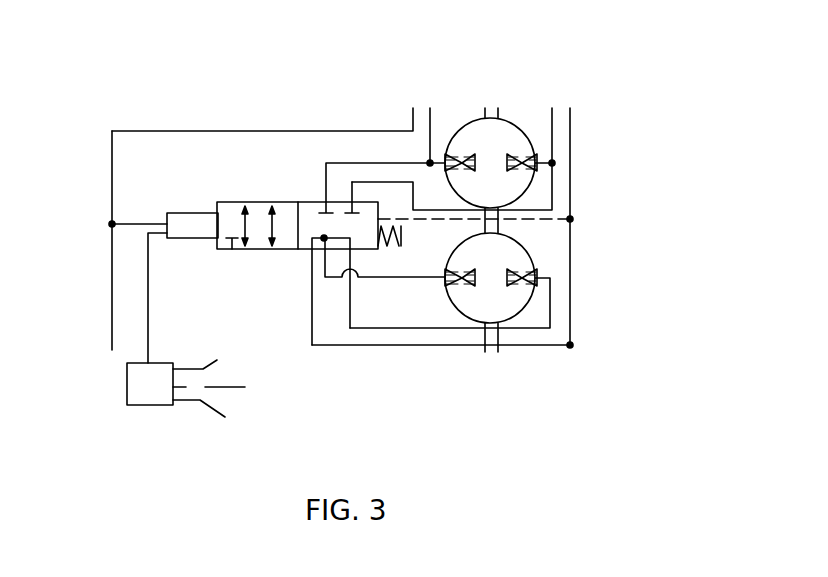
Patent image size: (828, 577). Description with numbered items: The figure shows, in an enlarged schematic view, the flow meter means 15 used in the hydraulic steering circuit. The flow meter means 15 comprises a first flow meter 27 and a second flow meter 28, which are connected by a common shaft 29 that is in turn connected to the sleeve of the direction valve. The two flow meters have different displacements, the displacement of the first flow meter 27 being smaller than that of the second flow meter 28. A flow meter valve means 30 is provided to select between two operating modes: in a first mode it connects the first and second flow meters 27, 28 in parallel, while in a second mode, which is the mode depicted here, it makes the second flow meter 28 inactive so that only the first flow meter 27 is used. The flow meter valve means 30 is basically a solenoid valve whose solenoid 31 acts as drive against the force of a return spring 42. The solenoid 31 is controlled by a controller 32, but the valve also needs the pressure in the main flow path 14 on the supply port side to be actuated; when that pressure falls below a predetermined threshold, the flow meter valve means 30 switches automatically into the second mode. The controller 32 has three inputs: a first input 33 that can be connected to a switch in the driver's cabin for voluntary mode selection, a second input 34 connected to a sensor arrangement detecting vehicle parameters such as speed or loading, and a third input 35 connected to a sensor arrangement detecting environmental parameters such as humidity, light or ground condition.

The main flow path 14 is at (108, 305).
The flow meter means 15 is at (618, 73).
The first flow meter 27 is at (520, 145).
The second flow meter 28 is at (517, 262).
The common shaft 29 is at (485, 232).
The flow meter valve means 30 is at (244, 252).
The solenoid 31 is at (188, 225).
The controller 32 is at (151, 387).
The first input 33 is at (213, 422).
The second input 34 is at (223, 392).
The third input 35 is at (209, 362).
The return spring 42 is at (397, 237).